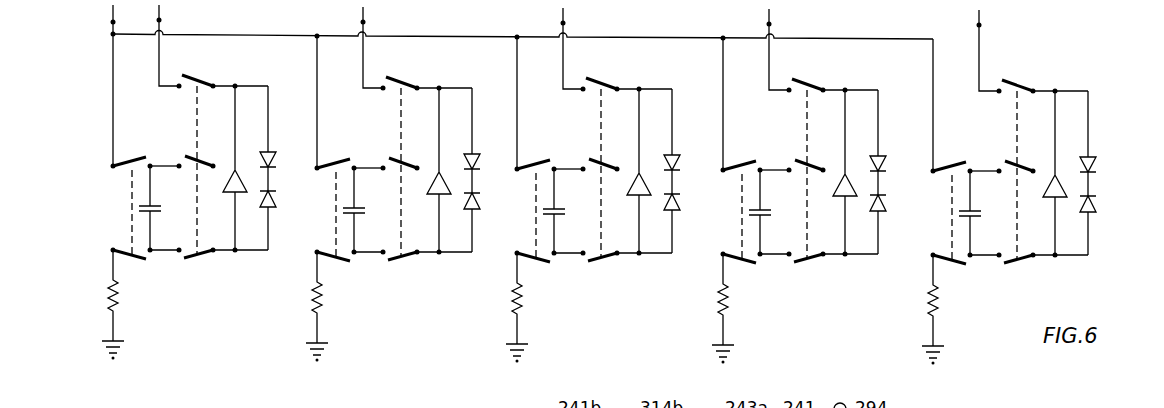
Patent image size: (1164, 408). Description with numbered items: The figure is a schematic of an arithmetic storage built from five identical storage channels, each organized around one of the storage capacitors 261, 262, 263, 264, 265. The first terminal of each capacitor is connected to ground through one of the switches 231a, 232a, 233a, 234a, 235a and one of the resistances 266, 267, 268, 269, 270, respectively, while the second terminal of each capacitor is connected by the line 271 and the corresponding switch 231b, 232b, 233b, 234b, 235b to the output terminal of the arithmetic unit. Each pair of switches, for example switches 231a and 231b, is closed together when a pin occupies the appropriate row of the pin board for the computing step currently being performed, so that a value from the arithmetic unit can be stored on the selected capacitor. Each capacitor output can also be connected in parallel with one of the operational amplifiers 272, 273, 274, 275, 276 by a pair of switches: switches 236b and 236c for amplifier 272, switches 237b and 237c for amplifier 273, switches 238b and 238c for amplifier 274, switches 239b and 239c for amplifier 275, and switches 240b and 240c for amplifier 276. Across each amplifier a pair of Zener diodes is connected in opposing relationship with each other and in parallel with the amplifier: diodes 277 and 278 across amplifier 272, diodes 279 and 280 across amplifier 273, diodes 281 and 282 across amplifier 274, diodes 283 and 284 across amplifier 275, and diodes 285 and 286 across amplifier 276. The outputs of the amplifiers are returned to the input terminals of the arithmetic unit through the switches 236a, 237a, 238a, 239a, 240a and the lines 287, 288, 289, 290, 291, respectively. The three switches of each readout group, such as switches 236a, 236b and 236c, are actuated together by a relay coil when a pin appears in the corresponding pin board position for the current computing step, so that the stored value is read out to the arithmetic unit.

The line 271 is at (89, 85).
The line 287 is at (184, 45).
The line 288 is at (388, 47).
The line 289 is at (588, 48).
The line 290 is at (794, 49).
The line 291 is at (1004, 50).
The switch 236a is at (223, 72).
The switch 237a is at (427, 74).
The switch 238a is at (627, 75).
The switch 239a is at (833, 76).
The switch 240a is at (1043, 77).
The switch 236b is at (179, 151).
The switch 237b is at (383, 153).
The switch 238b is at (583, 154).
The switch 239b is at (789, 155).
The switch 240b is at (999, 156).
The switch 236c is at (208, 268).
The switch 237c is at (412, 270).
The switch 238c is at (612, 271).
The switch 239c is at (818, 272).
The switch 240c is at (1028, 273).
The switch 231a is at (141, 268).
The switch 232a is at (345, 270).
The switch 233a is at (545, 271).
The switch 234a is at (751, 272).
The switch 235a is at (961, 273).
The switch 231b is at (149, 144).
The switch 232b is at (353, 146).
The switch 233b is at (553, 147).
The switch 234b is at (759, 148).
The switch 235b is at (969, 149).
The storage capacitor 261 is at (162, 208).
The storage capacitor 262 is at (366, 210).
The storage capacitor 263 is at (566, 211).
The storage capacitor 264 is at (772, 212).
The storage capacitor 265 is at (982, 213).
The resistance 266 is at (137, 305).
The resistance 267 is at (341, 307).
The resistance 268 is at (541, 308).
The resistance 269 is at (747, 309).
The resistance 270 is at (957, 310).
The operational amplifier 272 is at (225, 168).
The operational amplifier 273 is at (429, 170).
The operational amplifier 274 is at (629, 171).
The operational amplifier 275 is at (835, 172).
The operational amplifier 276 is at (1045, 173).
The Zener diode 277 is at (285, 138).
The Zener diode 278 is at (286, 220).
The Zener diode 279 is at (489, 140).
The Zener diode 280 is at (490, 222).
The Zener diode 281 is at (689, 141).
The Zener diode 282 is at (690, 223).
The Zener diode 283 is at (895, 142).
The Zener diode 284 is at (896, 224).
The Zener diode 285 is at (1105, 143).
The Zener diode 286 is at (1106, 225).